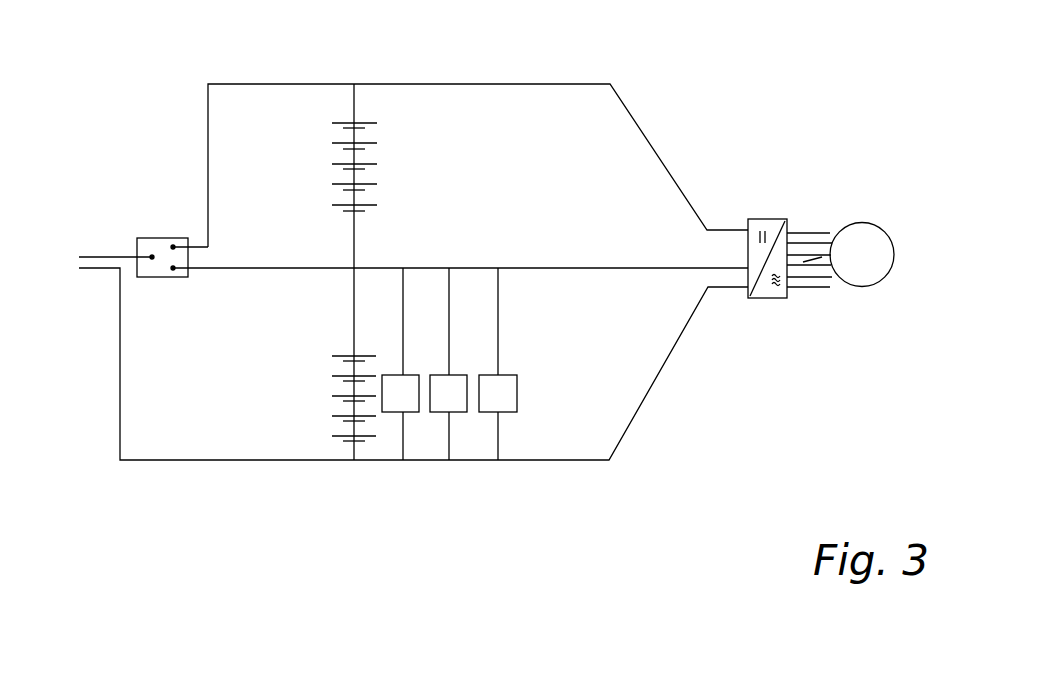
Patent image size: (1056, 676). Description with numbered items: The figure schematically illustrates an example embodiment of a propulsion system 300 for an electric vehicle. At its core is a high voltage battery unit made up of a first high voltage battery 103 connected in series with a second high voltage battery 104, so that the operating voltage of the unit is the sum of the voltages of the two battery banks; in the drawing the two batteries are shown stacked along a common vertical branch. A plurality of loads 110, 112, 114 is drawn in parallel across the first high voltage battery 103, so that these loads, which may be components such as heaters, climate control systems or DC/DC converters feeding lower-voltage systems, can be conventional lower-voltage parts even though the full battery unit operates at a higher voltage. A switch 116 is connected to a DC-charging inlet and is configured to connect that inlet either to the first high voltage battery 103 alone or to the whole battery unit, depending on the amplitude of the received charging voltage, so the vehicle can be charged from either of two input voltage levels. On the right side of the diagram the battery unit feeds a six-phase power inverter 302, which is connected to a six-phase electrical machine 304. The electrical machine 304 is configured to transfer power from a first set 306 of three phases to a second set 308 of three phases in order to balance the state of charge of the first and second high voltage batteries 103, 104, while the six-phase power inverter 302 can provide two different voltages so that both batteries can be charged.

The propulsion system 300 is at (700, 92).
The first high voltage battery 103 is at (348, 400).
The second high voltage battery 104 is at (351, 170).
The load 110 is at (407, 373).
The load 112 is at (457, 373).
The load 114 is at (510, 373).
The switch 116 is at (157, 237).
The six-phase power inverter 302 is at (757, 218).
The six-phase electrical machine 304 is at (867, 221).
The first set of three phases 306 is at (810, 231).
The second set of three phases 308 is at (807, 288).